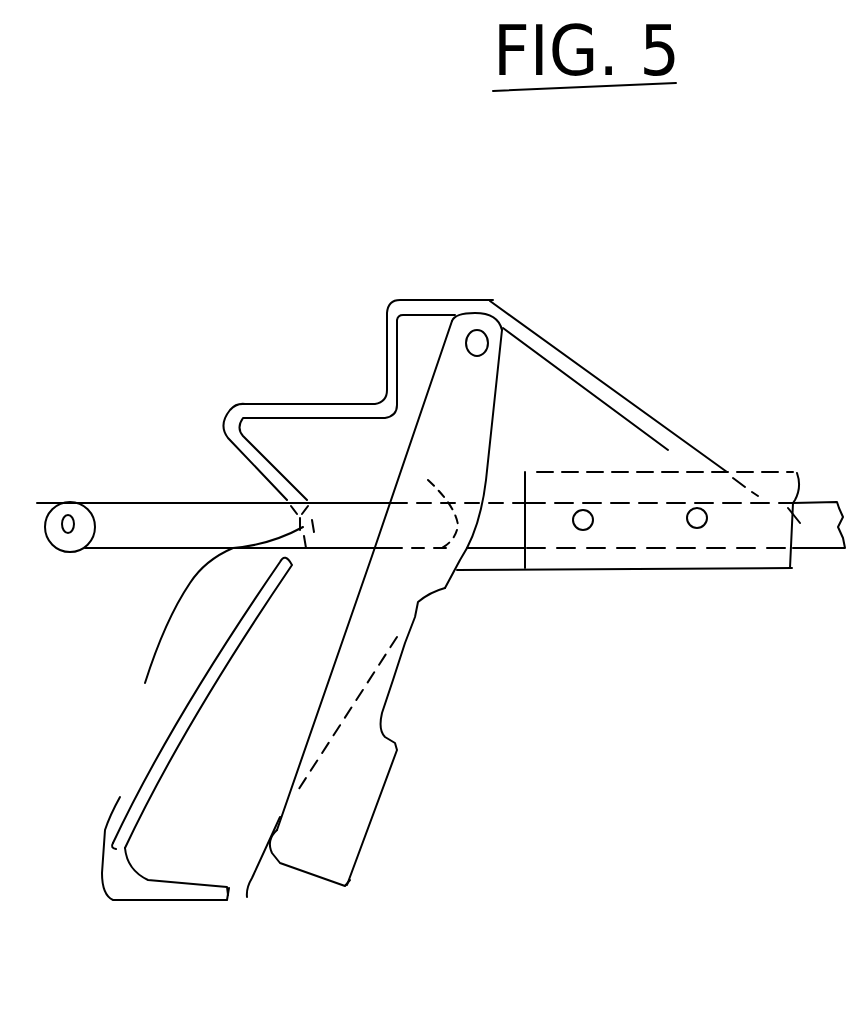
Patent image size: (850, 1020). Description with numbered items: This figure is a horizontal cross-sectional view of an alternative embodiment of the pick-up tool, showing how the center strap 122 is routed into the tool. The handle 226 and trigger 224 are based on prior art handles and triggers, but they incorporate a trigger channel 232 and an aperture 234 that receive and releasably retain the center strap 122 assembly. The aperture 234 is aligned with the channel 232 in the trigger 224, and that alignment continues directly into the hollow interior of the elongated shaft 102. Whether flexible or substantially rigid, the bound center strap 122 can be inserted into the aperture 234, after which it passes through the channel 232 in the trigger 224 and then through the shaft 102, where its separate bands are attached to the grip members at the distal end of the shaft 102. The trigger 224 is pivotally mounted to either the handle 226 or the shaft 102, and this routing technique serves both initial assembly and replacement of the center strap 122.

The shaft 102 is at (537, 527).
The center strap 122 is at (38, 503).
The trigger 224 is at (467, 530).
The handle 226 is at (321, 403).
The trigger channel 232 is at (421, 492).
The aperture 234 is at (190, 713).